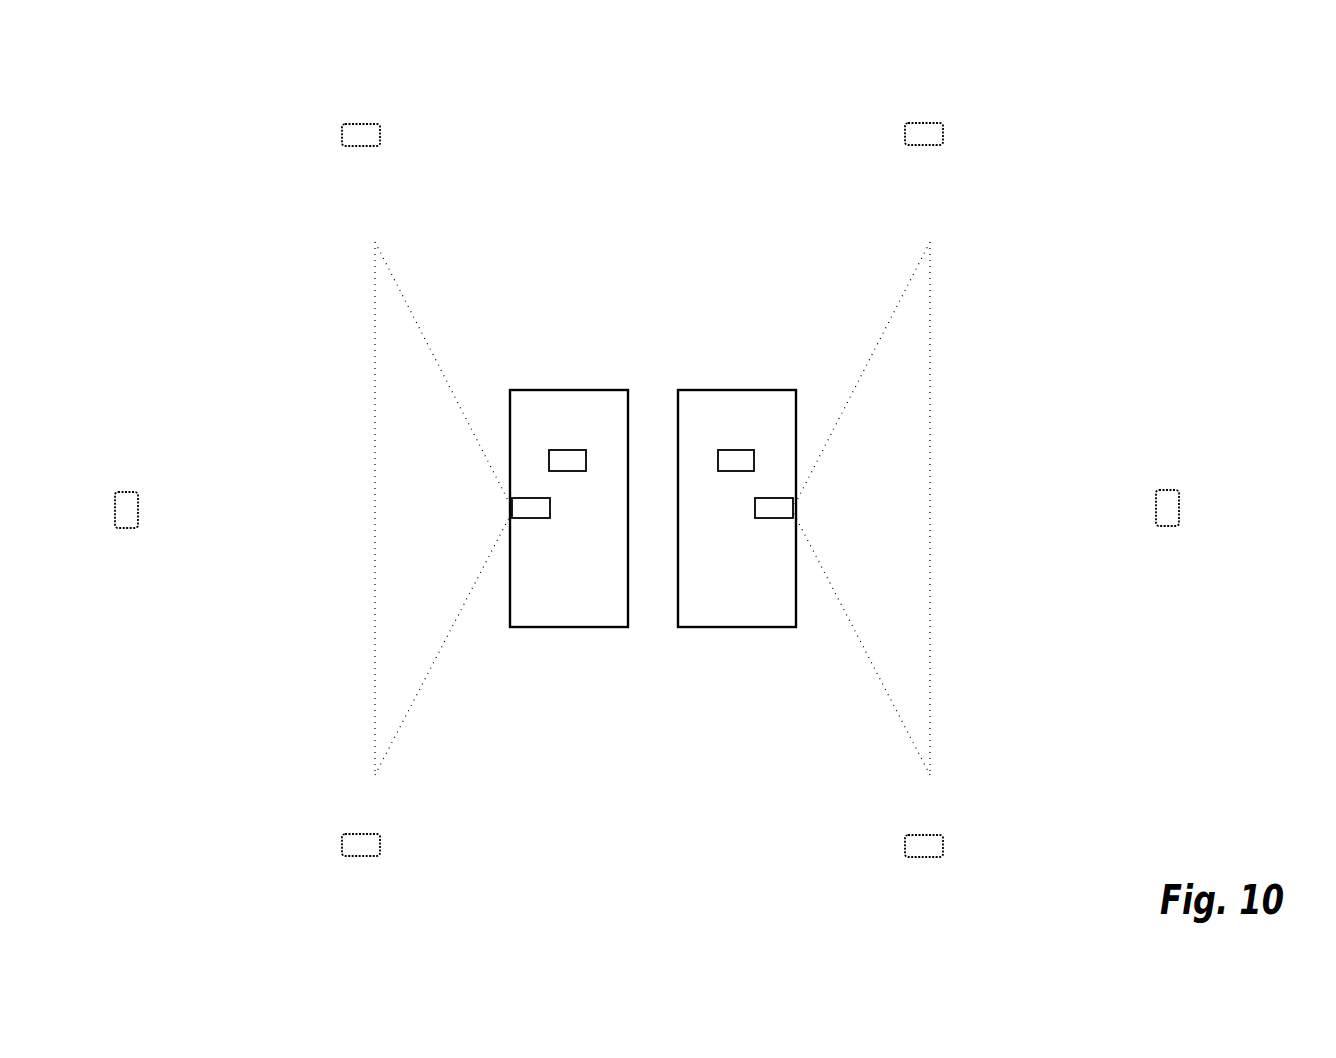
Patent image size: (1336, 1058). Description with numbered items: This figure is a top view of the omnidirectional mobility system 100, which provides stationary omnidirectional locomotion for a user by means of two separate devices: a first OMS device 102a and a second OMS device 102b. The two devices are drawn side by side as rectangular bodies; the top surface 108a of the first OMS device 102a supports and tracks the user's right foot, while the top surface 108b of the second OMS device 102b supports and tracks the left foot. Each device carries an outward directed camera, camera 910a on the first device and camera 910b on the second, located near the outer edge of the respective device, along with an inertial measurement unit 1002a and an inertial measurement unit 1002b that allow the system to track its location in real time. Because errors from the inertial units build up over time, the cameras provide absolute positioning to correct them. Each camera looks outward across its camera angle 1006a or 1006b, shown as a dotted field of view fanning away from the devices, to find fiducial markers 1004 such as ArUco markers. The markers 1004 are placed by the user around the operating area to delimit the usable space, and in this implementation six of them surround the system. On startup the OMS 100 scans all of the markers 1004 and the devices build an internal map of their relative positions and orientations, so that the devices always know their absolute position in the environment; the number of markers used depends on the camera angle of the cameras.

The omnidirectional mobility system 100 is at (1056, 55).
The first OMS device 102a is at (587, 468).
The second OMS device 102b is at (764, 468).
The top surface of first OMS device 108a is at (547, 617).
The top surface of second OMS device 108b is at (732, 612).
The outward directed camera 910a is at (535, 510).
The outward directed camera 910b is at (779, 510).
The inertial measurement unit 1002a is at (575, 461).
The inertial measurement unit 1002b is at (738, 455).
The fiducial markers 1004 is at (371, 127).
The camera angle 1006a is at (416, 326).
The camera angle 1006b is at (820, 555).